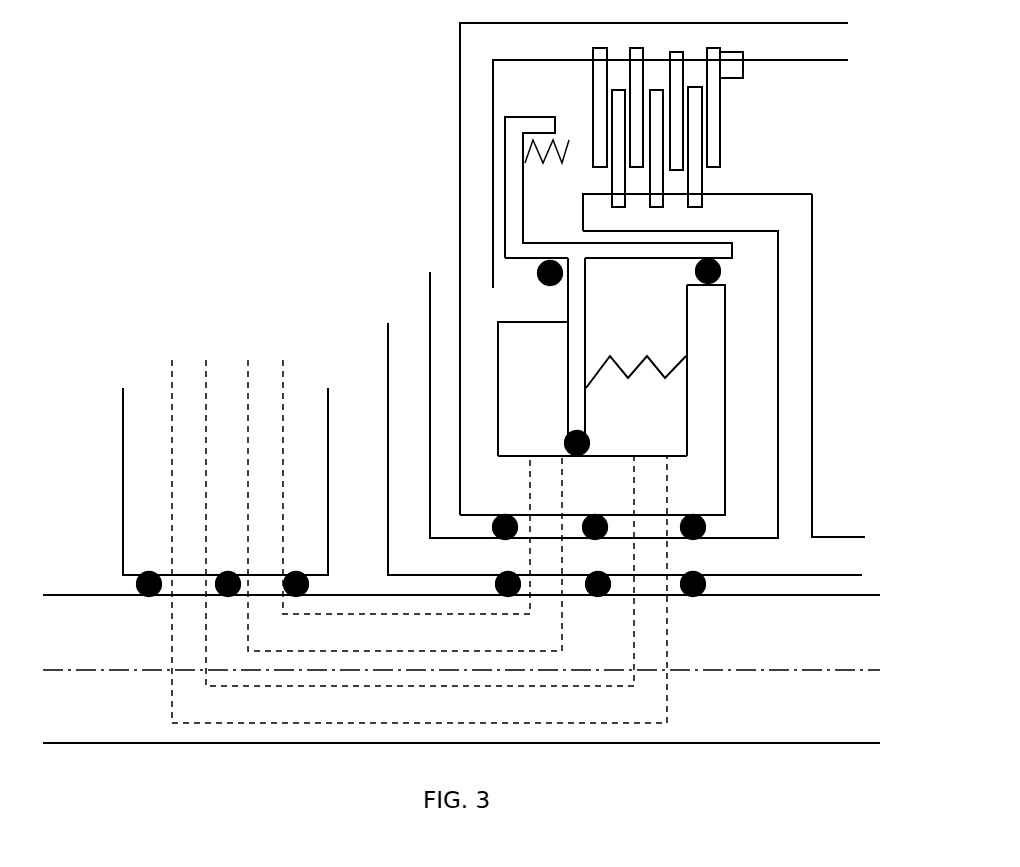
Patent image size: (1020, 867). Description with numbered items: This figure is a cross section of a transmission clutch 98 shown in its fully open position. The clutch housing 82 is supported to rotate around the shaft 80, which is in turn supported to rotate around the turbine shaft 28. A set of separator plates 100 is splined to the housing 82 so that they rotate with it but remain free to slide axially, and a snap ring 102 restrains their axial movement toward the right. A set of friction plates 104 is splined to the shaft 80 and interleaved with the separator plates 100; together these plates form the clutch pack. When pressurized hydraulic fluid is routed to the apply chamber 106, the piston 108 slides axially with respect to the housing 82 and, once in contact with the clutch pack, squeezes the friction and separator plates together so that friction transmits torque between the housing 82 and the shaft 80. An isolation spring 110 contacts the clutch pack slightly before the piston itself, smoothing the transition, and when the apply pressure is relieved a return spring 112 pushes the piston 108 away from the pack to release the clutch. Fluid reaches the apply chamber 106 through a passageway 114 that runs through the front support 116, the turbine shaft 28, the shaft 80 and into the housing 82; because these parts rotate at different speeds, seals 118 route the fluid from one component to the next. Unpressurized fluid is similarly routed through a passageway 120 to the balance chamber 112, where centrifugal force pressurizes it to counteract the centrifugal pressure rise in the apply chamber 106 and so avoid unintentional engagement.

The turbine shaft 28 is at (75, 594).
The shaft 80 is at (813, 360).
The clutch housing 82 is at (460, 175).
The clutch 98 is at (320, 190).
The separator plates 100 is at (720, 132).
The snap ring 102 is at (743, 78).
The friction plates 104 is at (702, 172).
The apply chamber 106 is at (592, 389).
The piston 108 is at (615, 257).
The isolation spring 110 is at (546, 160).
The return spring 112 is at (655, 400).
The passageway 114 is at (528, 634).
The front support 116 is at (328, 447).
The seals 118 is at (305, 582).
The passageway 120 is at (653, 703).